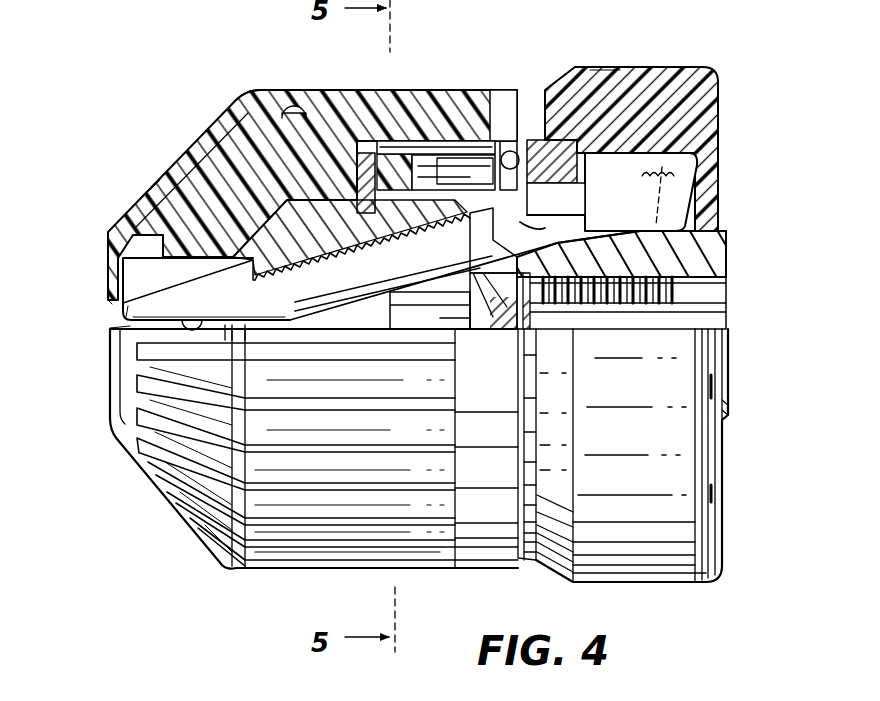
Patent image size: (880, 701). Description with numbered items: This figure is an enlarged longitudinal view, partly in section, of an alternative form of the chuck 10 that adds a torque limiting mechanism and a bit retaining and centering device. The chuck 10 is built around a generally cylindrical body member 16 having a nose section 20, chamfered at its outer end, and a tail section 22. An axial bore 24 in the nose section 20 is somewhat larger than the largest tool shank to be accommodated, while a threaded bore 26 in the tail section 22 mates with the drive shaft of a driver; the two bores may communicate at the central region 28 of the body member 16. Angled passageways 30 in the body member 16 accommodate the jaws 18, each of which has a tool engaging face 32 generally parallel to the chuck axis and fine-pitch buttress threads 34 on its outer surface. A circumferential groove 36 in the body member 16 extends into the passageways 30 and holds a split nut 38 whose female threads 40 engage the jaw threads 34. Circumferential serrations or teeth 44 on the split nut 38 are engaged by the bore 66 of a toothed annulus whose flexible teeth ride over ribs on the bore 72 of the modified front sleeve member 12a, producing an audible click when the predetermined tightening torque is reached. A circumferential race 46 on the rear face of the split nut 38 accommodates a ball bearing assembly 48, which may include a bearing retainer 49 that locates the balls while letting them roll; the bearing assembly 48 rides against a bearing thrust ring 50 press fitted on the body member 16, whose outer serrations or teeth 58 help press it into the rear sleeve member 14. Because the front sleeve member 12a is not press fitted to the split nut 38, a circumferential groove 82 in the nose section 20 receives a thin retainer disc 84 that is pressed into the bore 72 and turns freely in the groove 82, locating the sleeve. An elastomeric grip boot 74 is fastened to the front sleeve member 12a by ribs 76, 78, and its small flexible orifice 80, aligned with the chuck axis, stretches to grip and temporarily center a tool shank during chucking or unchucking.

The chuck 10 is at (222, 574).
The front sleeve member 12a is at (343, 123).
The rear sleeve member 14 is at (720, 98).
The body member 16 is at (263, 228).
The jaws 18 is at (123, 321).
The nose section 20 is at (110, 270).
The tail section 22 is at (728, 248).
The axial bore 24 is at (480, 331).
The threaded bore 26 is at (730, 293).
The central region 28 is at (507, 350).
The passageways 30 is at (293, 293).
The tool engaging face 32 is at (187, 312).
The threads 34 is at (474, 250).
The circumferential groove 36 is at (482, 254).
The split nut 38 is at (470, 183).
The female threads 40 is at (527, 228).
The serrations or teeth 44 is at (467, 168).
The circumferential race 46 is at (528, 188).
The ball bearing assembly 48 is at (573, 133).
The bearing retainer 49 is at (510, 135).
The bearing thrust ring 50 is at (583, 165).
The serrations or teeth 58 is at (607, 73).
The bore 66 is at (433, 155).
The bore 72 is at (387, 147).
The grip boot 74 is at (152, 177).
The rib 76 is at (279, 122).
The rib 78 is at (140, 230).
The flexible orifice 80 is at (123, 310).
The circumferential groove 82 is at (368, 216).
The retainer disc 84 is at (327, 177).